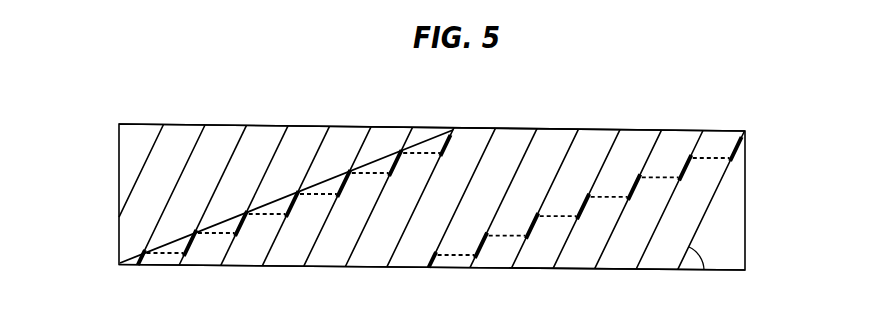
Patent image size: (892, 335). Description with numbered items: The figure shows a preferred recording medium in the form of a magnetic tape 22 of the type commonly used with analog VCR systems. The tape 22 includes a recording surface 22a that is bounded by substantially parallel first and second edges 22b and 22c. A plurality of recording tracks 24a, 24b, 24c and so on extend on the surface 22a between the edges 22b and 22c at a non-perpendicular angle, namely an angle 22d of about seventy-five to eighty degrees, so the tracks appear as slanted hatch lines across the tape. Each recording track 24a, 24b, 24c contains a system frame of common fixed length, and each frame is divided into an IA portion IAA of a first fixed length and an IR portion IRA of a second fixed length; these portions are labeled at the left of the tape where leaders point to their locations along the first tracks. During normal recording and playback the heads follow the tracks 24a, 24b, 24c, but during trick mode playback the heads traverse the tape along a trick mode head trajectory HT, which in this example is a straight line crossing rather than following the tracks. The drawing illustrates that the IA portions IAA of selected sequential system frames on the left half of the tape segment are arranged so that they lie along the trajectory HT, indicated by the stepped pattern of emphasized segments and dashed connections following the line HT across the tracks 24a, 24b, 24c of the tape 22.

The magnetic tape 22 is at (660, 113).
The recording surface 22a is at (473, 134).
The first edge 22b is at (535, 133).
The second edge 22c is at (527, 270).
The angle 22d is at (700, 255).
The recording track 24a is at (242, 125).
The recording track 24b is at (281, 125).
The recording track 24c is at (322, 127).
The trick mode head trajectory HT is at (297, 193).
The IR portion IRA is at (217, 187).
The IA portion IAA is at (210, 215).